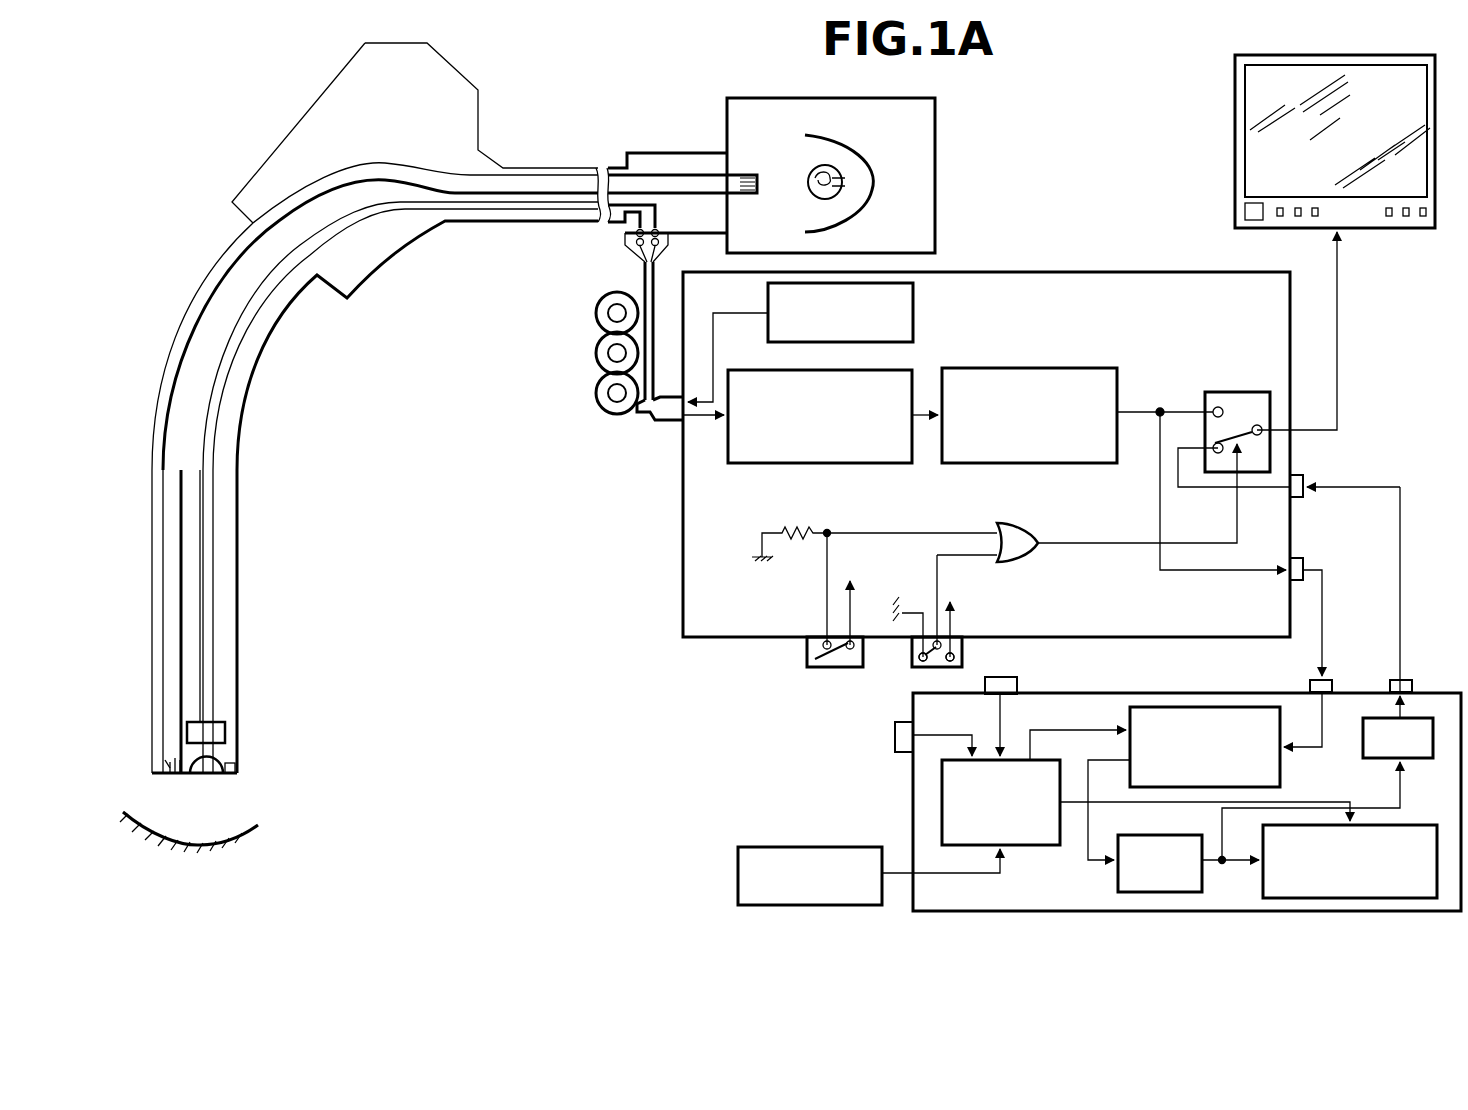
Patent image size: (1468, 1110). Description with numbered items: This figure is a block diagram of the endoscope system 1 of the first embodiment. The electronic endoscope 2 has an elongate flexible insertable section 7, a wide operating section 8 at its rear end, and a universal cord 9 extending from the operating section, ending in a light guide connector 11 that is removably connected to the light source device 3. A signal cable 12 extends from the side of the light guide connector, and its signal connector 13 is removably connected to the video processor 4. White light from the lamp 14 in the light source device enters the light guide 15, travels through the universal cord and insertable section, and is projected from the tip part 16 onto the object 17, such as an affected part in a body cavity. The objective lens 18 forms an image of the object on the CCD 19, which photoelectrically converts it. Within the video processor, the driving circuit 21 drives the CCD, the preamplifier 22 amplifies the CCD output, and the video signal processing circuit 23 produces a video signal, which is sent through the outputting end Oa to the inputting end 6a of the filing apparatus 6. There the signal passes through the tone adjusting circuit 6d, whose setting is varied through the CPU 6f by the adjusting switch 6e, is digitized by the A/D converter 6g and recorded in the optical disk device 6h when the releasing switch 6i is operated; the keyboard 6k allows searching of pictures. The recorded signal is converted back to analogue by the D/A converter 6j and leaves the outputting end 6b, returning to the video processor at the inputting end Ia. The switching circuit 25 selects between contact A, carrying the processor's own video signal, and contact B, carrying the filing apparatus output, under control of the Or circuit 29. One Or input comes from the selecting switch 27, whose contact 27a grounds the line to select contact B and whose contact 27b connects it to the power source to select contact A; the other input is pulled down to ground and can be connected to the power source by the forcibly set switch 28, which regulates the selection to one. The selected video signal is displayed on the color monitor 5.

The endoscope system 1 is at (515, 652).
The electronic endoscope 2 is at (347, 305).
The light source device 3 is at (936, 178).
The video processor 4 is at (1100, 270).
The color monitor 5 is at (1235, 170).
The filing apparatus 6 is at (912, 788).
The inputting end 6a is at (1332, 680).
The outputting end 6b is at (1412, 680).
The tone adjusting circuit 6d is at (1282, 772).
The adjusting switch 6e is at (1018, 683).
The CPU 6f is at (1035, 846).
The A/D converter 6g is at (1118, 885).
The optical disk device 6h is at (1263, 885).
The releasing switch 6i is at (893, 740).
The D/A converter 6j is at (1433, 735).
The keyboard 6k is at (790, 847).
The insertable section 7 is at (238, 525).
The operating section 8 is at (292, 128).
The universal cord 9 is at (546, 165).
The light guide connector 11 is at (664, 152).
The signal cable 12 is at (595, 318).
The signal connector 13 is at (642, 424).
The lamp 14 is at (810, 170).
The light guide 15 is at (485, 185).
The tip part 16 is at (136, 712).
The object 17 is at (230, 832).
The objective lens 18 is at (236, 765).
The CCD 19 is at (226, 732).
The driving circuit 21 is at (914, 318).
The preamplifier 22 is at (840, 464).
The video signal processing circuit 23 is at (1042, 368).
The switching circuit 25 is at (1242, 392).
The selecting switch 27 is at (911, 658).
The contact 27a is at (918, 668).
The contact 27b is at (965, 660).
The forcibly set switch 28 is at (806, 660).
The Or circuit 29 is at (1022, 526).
The contact A is at (1213, 410).
The contact B is at (1220, 454).
The video signal inputting end Ia is at (1306, 476).
The video signal outputting end Oa is at (1306, 560).